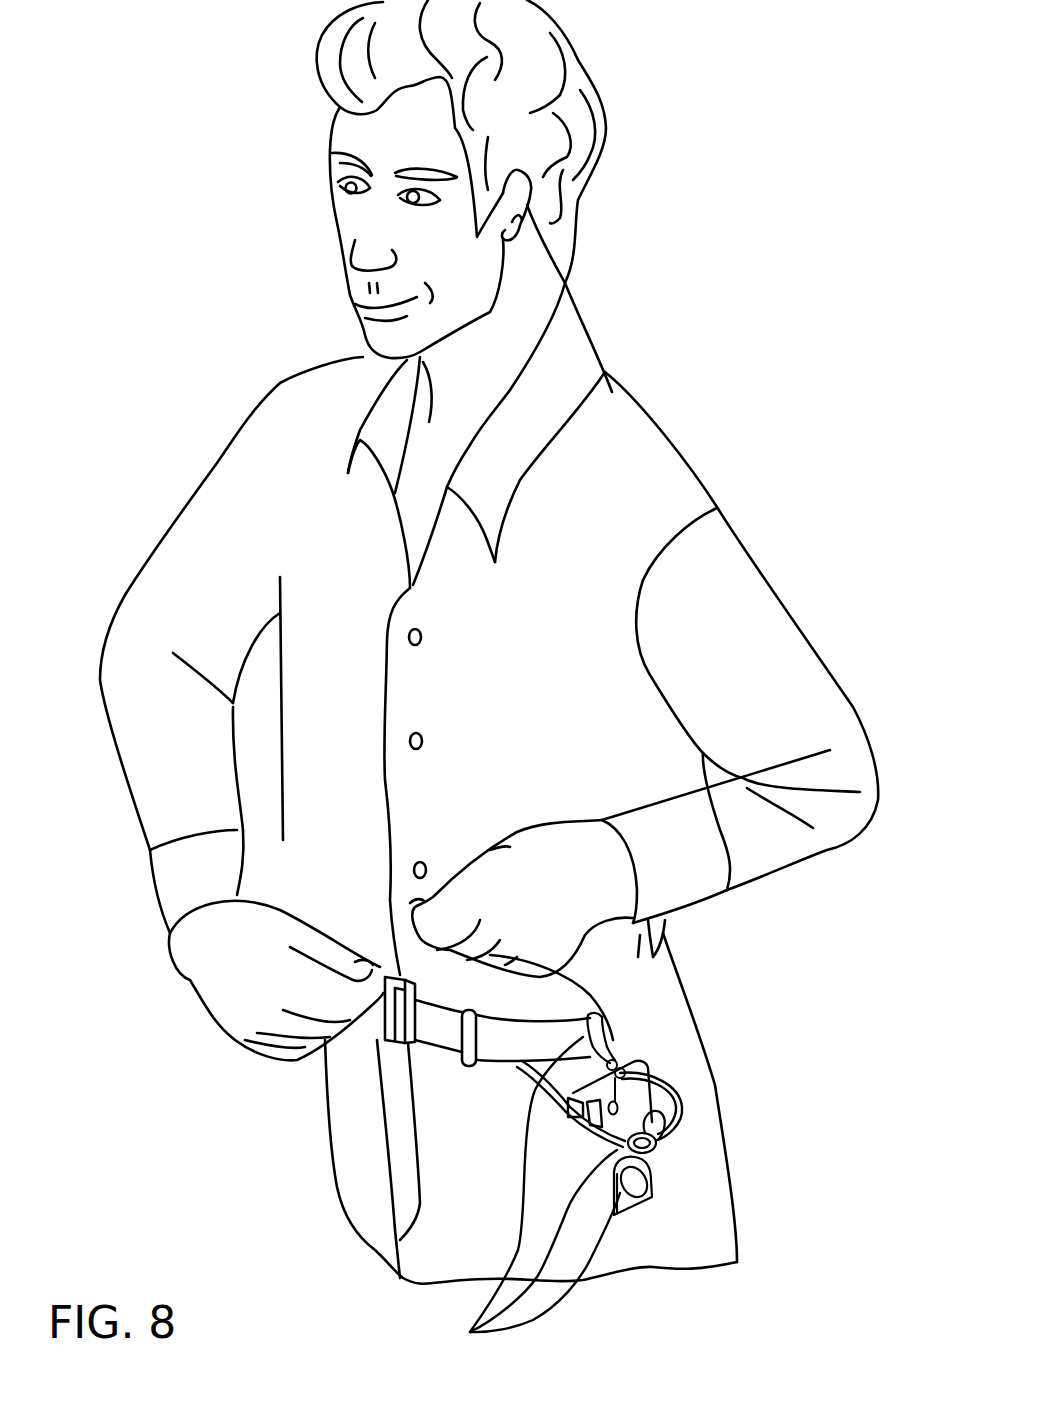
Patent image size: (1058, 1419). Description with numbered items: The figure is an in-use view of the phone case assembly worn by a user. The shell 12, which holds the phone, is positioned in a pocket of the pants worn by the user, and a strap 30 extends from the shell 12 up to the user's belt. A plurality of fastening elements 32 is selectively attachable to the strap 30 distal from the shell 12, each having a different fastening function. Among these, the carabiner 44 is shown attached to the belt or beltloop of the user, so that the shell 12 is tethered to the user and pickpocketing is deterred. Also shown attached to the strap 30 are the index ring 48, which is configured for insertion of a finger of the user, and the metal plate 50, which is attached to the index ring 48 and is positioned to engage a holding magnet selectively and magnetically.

The carabiner 44 is at (603, 1047).
The shell 12 is at (628, 1068).
The strap 30 is at (680, 1103).
The index ring 48 is at (660, 1138).
The metal plate 50 is at (652, 1197).
The fastening element 32 is at (473, 1330).